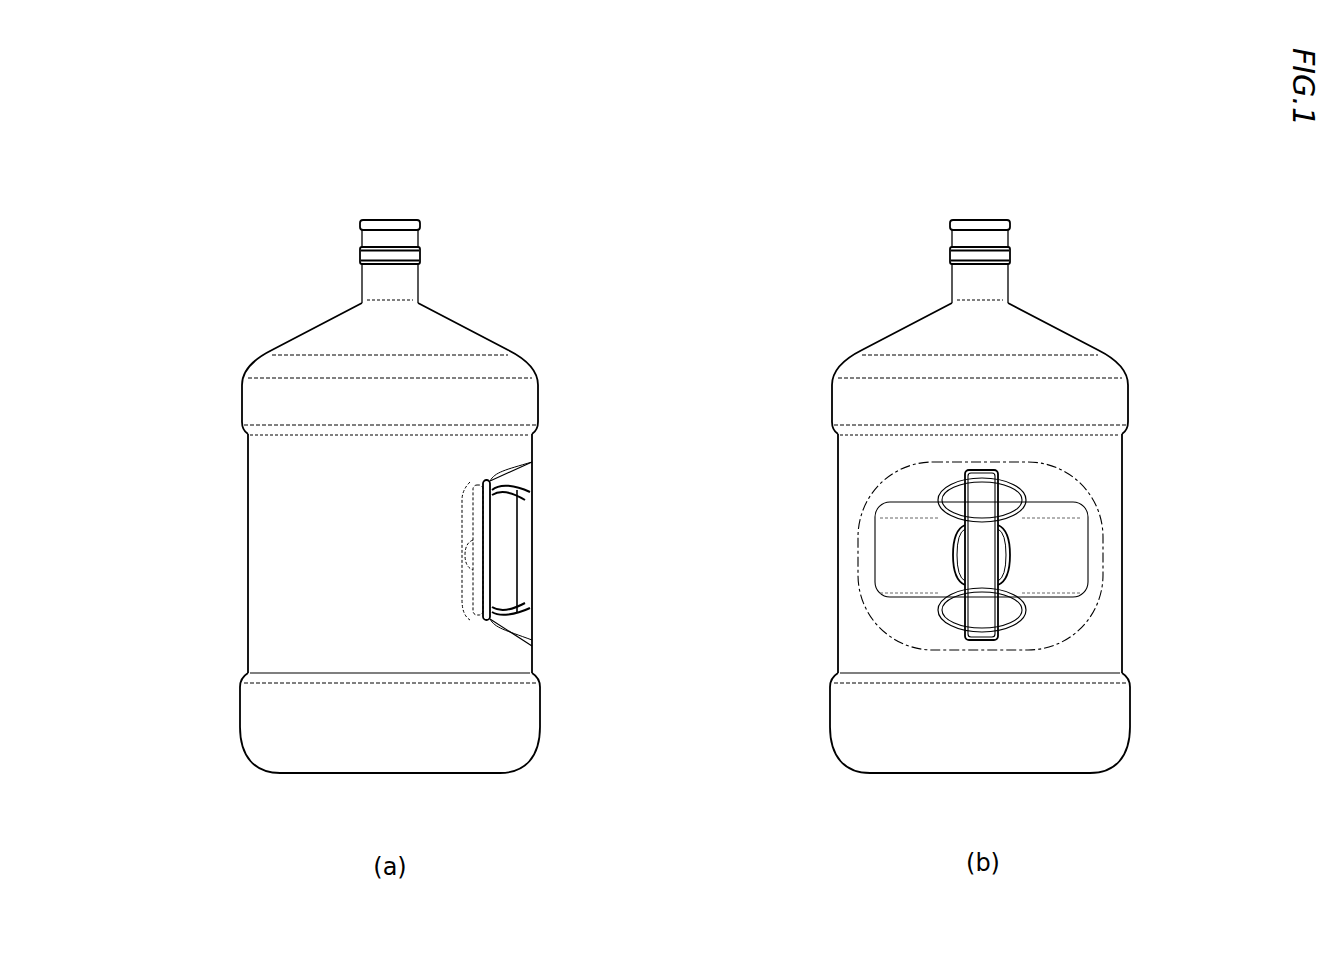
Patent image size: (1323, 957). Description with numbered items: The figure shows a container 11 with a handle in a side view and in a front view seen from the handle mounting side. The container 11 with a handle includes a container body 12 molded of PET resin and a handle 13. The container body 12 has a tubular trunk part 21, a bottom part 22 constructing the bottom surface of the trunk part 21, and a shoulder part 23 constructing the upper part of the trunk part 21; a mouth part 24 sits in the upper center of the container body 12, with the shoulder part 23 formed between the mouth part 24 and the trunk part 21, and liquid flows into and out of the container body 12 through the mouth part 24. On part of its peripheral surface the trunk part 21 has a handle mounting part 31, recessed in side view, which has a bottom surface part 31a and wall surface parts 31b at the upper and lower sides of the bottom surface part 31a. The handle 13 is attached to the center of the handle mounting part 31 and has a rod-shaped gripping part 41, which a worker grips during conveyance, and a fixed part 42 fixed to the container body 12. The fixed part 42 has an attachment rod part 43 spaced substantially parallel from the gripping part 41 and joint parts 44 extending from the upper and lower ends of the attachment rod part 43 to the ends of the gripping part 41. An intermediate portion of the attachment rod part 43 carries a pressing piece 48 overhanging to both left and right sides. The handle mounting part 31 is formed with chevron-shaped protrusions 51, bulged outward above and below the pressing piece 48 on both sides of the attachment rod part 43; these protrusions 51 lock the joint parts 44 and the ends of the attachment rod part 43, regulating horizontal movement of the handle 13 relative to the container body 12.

The container with a handle 11 is at (542, 319).
The container body 12 is at (248, 464).
The handle 13 is at (538, 519).
The trunk part 21 is at (248, 625).
The bottom part 22 is at (440, 774).
The shoulder part 23 is at (312, 333).
The mouth part 24 is at (373, 218).
The handle mounting part 31 is at (497, 577).
The bottom surface part 31a is at (488, 548).
The wall surface parts 31b is at (505, 495).
The gripping part 41 is at (524, 585).
The fixed part 42 is at (476, 509).
The attachment rod part 43 is at (477, 580).
The joint parts 44 is at (487, 490).
The pressing piece 48 is at (953, 547).
The chevron-shaped protrusions 51 is at (510, 498).